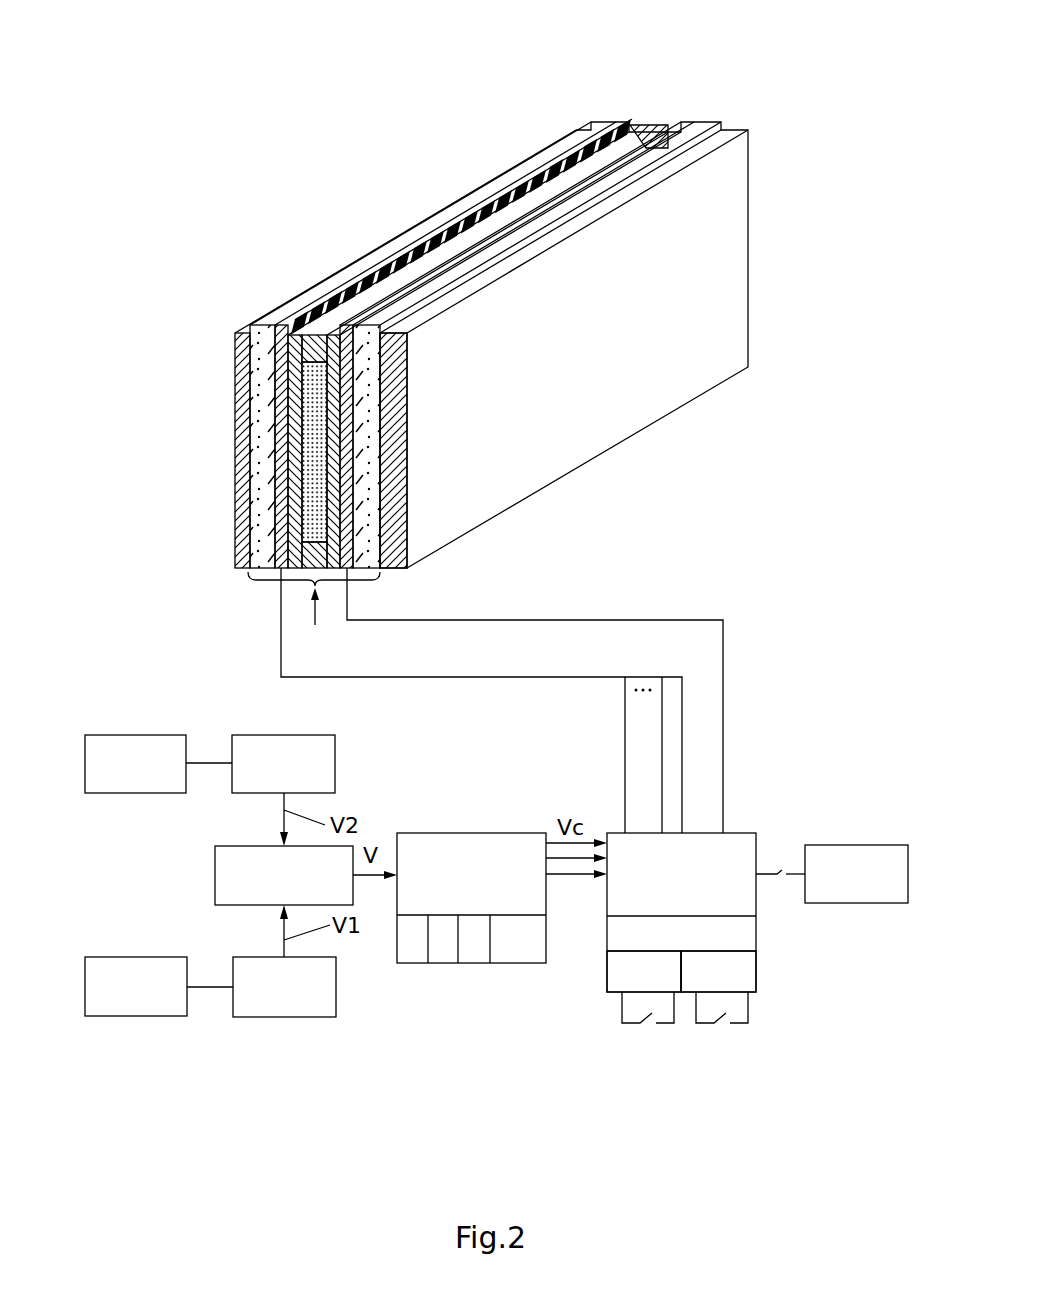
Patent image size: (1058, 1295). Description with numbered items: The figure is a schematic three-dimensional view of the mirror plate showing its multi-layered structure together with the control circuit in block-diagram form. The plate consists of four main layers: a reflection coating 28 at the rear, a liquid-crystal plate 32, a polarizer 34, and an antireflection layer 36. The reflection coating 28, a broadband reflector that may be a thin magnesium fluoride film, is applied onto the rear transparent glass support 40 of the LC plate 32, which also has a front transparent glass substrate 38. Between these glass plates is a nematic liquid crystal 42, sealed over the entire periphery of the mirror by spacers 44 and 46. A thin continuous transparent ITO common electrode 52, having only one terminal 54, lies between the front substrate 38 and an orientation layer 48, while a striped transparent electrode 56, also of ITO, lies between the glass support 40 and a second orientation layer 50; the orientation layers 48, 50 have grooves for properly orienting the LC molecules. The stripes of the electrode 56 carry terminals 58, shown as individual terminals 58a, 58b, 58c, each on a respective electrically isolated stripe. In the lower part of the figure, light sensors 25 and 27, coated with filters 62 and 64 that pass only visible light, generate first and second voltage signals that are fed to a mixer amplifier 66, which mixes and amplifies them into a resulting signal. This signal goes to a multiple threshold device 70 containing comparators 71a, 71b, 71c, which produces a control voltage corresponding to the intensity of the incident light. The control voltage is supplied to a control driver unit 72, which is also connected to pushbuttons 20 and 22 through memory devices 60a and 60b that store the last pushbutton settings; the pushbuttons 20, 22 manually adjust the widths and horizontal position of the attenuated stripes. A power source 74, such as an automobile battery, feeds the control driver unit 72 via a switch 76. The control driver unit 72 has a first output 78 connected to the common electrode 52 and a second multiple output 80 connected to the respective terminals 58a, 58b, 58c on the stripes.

The pushbutton 20 is at (662, 1025).
The pushbutton 22 is at (735, 1025).
The light sensor 25 is at (272, 1010).
The light sensor 27 is at (265, 745).
The reflection coating 28 is at (240, 330).
The liquid-crystal plate 32 is at (314, 617).
The polarizer 34 is at (385, 520).
The antireflection layer 36 is at (398, 480).
The front transparent glass substrate 38 is at (372, 548).
The rear transparent glass support 40 is at (337, 285).
The liquid crystal 42 is at (312, 443).
The spacer 44 is at (312, 555).
The spacer 46 is at (317, 350).
The orientation layer 48 is at (318, 348).
The orientation layer 50 is at (418, 265).
The common electrode 52 is at (538, 212).
The terminal 54 is at (510, 233).
The striped transparent electrode 56 is at (283, 392).
The terminals 58 is at (630, 109).
The terminal 58a is at (612, 120).
The terminal 58b is at (593, 137).
The terminal 58c is at (553, 157).
The memory device 60a is at (622, 977).
The memory device 60b is at (750, 965).
The filter 62 is at (142, 1003).
The filter 64 is at (145, 745).
The mixer amplifier 66 is at (223, 873).
The multiple threshold device 70 is at (472, 820).
The comparator 71a is at (415, 950).
The comparator 71b is at (443, 953).
The comparator 71c is at (475, 953).
The control driver unit 72 is at (742, 843).
The power source 74 is at (847, 853).
The switch 76 is at (786, 866).
The first output 78 is at (637, 618).
The second multiple output 80 is at (580, 677).